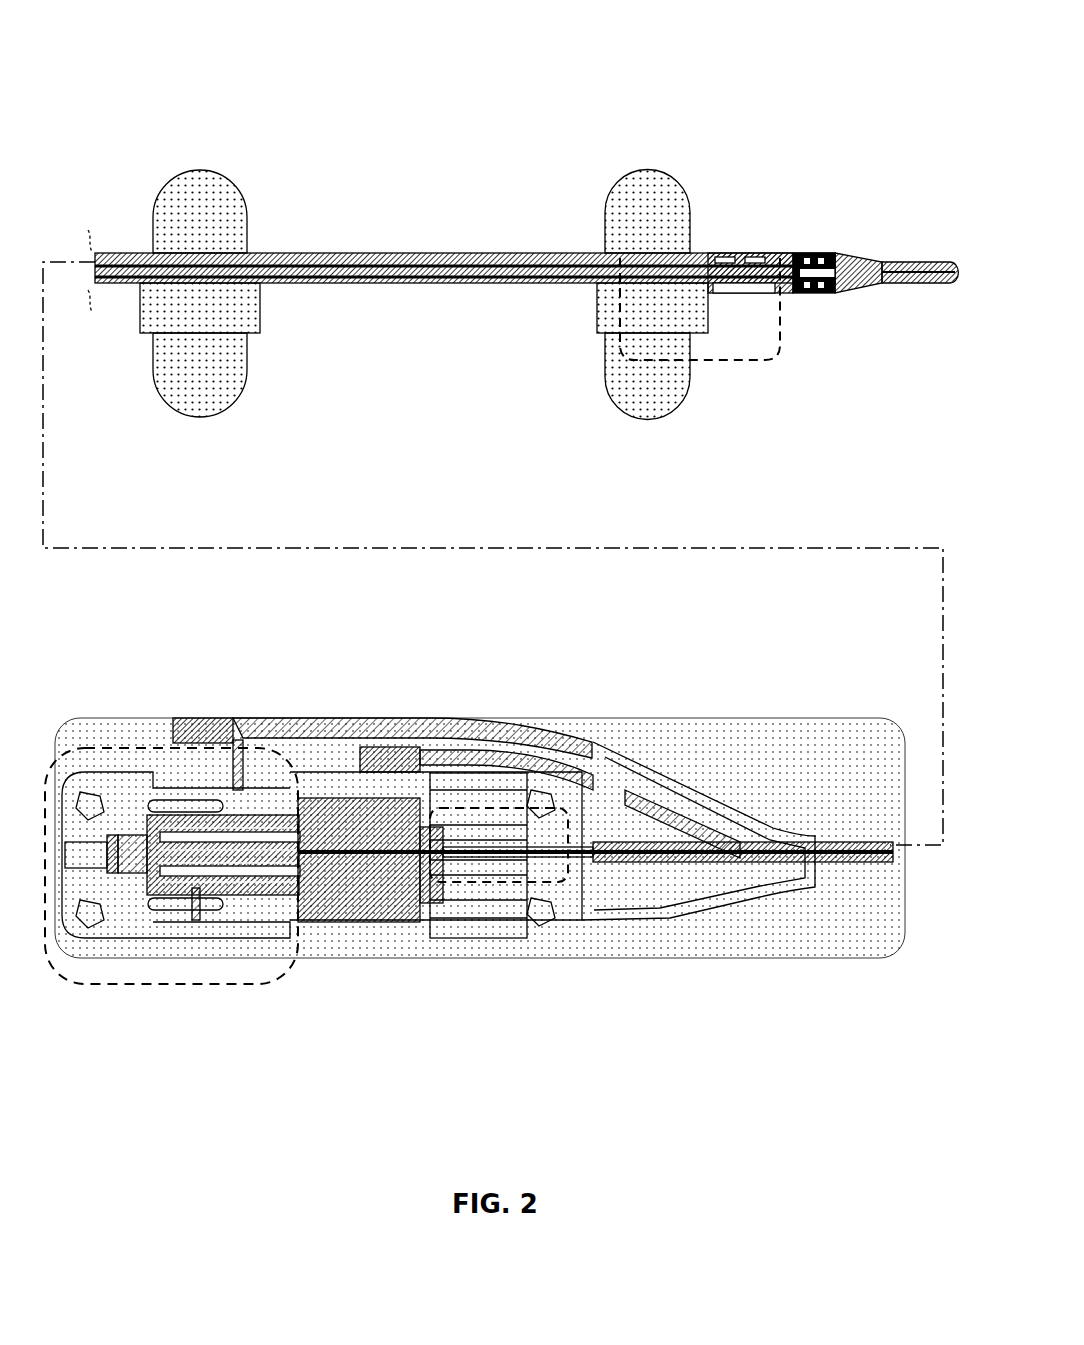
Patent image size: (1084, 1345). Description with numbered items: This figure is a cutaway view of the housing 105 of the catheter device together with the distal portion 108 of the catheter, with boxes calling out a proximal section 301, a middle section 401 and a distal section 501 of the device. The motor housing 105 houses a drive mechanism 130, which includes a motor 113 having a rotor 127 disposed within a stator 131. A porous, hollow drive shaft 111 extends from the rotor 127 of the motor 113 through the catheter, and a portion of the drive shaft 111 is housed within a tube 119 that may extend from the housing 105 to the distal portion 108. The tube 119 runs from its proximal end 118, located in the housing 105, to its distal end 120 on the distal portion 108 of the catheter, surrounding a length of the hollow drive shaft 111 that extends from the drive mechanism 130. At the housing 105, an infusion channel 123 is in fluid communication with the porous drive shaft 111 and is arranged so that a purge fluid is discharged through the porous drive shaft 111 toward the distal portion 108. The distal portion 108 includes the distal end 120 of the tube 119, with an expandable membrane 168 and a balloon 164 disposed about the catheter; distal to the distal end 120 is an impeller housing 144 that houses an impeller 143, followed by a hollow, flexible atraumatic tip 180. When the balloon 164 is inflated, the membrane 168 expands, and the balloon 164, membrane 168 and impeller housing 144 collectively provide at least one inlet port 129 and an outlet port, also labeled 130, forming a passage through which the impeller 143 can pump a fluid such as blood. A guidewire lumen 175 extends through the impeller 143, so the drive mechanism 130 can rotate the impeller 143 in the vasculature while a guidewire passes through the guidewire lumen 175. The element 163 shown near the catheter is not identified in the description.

The distal portion 108 is at (491, 52).
The stand 163 is at (203, 170).
The balloon 164 is at (118, 262).
The distal end 120 is at (698, 240).
The impeller housing 144 is at (747, 253).
The drive mechanism 130 is at (781, 243).
The atraumatic tip 180 is at (890, 262).
The guidewire lumen 175 is at (908, 287).
The impeller 143 is at (782, 297).
The expandable membrane 168 is at (697, 313).
The distal section 501 is at (710, 362).
The inlet port 129 is at (585, 305).
The housing 105 is at (130, 775).
The motor 113 is at (344, 800).
The infusion channel 123 is at (692, 818).
The rotor 127 is at (330, 867).
The stator 131 is at (398, 897).
The middle section 401 is at (465, 882).
The porous drive shaft 111 is at (518, 882).
The proximal end 118 is at (607, 880).
The tube 119 is at (683, 862).
The proximal section 301 is at (130, 985).